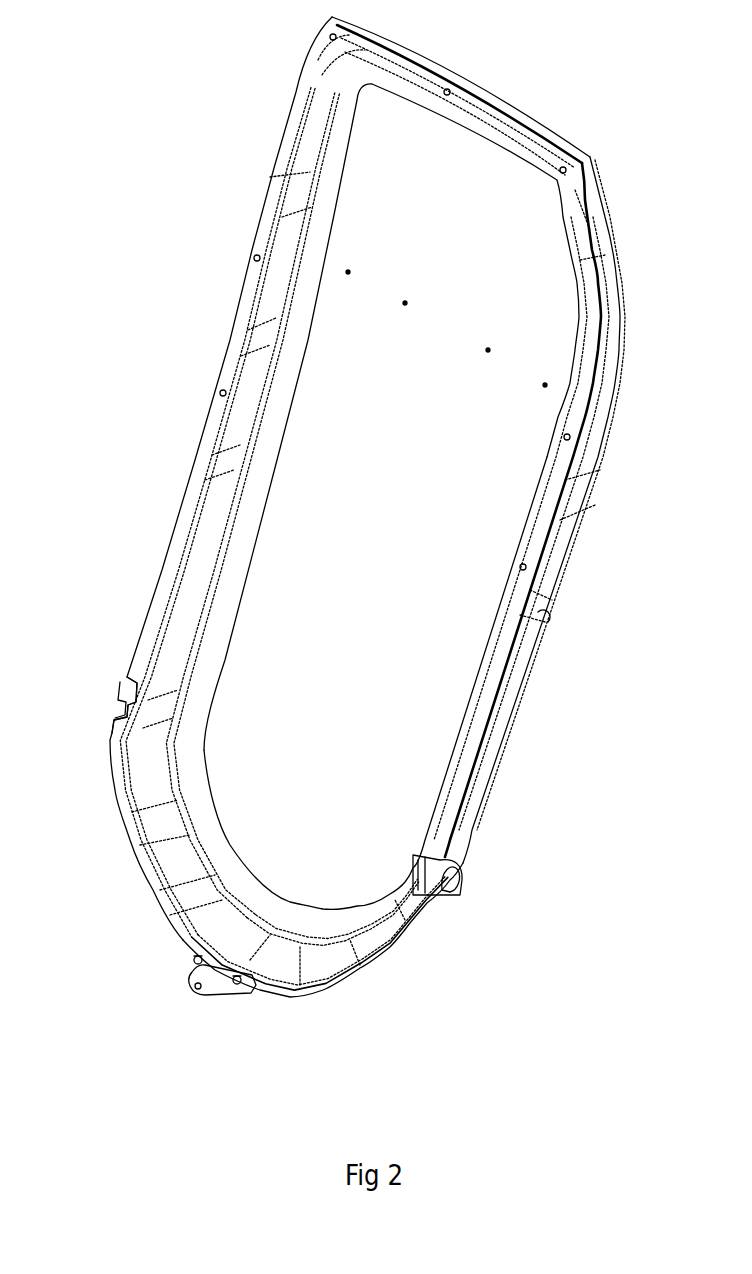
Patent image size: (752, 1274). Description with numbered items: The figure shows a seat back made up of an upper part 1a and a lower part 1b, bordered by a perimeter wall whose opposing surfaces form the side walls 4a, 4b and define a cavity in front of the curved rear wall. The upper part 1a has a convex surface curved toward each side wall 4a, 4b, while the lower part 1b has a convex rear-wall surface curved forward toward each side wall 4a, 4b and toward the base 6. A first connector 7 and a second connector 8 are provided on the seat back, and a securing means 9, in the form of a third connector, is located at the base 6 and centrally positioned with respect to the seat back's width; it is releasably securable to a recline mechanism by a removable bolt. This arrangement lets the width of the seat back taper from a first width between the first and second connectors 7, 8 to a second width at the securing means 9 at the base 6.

The upper part 1a is at (353, 358).
The lower part 1b is at (362, 817).
The side wall 4a is at (255, 372).
The side wall 4b is at (572, 495).
The base 6 is at (223, 937).
The first connector 7 is at (300, 910).
The second connector 8 is at (107, 703).
The securing means 9 is at (210, 998).